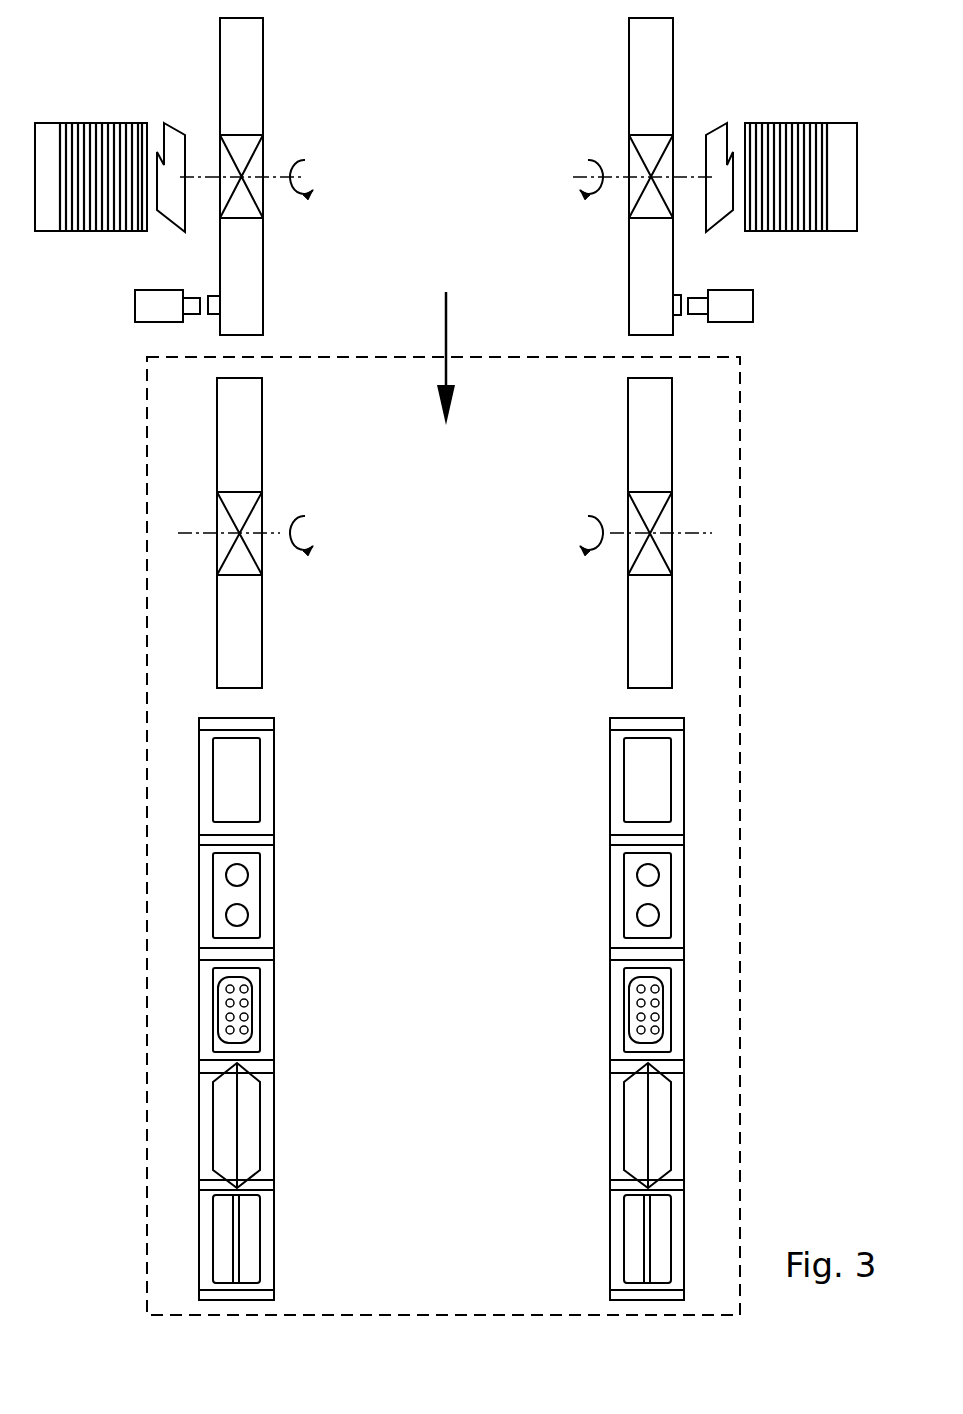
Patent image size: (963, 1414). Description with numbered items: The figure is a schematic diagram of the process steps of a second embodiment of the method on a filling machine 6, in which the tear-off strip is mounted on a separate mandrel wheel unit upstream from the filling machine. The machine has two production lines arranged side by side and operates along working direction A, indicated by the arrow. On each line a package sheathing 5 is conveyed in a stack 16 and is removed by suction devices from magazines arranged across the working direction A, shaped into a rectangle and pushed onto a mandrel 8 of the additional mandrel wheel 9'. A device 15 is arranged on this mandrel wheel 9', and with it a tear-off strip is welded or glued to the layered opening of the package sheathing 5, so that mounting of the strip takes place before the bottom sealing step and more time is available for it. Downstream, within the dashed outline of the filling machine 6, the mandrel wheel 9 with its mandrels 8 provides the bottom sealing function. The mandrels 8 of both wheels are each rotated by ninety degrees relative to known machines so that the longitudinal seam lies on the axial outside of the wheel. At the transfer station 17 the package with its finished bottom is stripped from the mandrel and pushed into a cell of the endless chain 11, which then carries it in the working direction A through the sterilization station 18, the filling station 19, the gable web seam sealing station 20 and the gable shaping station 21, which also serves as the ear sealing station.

The package sheathing 5 is at (170, 125).
The filling machine 6 is at (741, 600).
The mandrel 8 is at (262, 198).
The mandrel wheel 9 is at (445, 533).
The additional mandrel wheel 9' is at (446, 171).
The endless chain 11 is at (275, 735).
The device 15 is at (143, 315).
The stack 16 is at (100, 225).
The transfer station 17 is at (602, 770).
The sterilization station 18 is at (602, 897).
The filling station 19 is at (602, 997).
The gable web seam sealing station 20 is at (602, 1120).
The gable shaping station 21 is at (602, 1233).
The working direction A is at (446, 328).